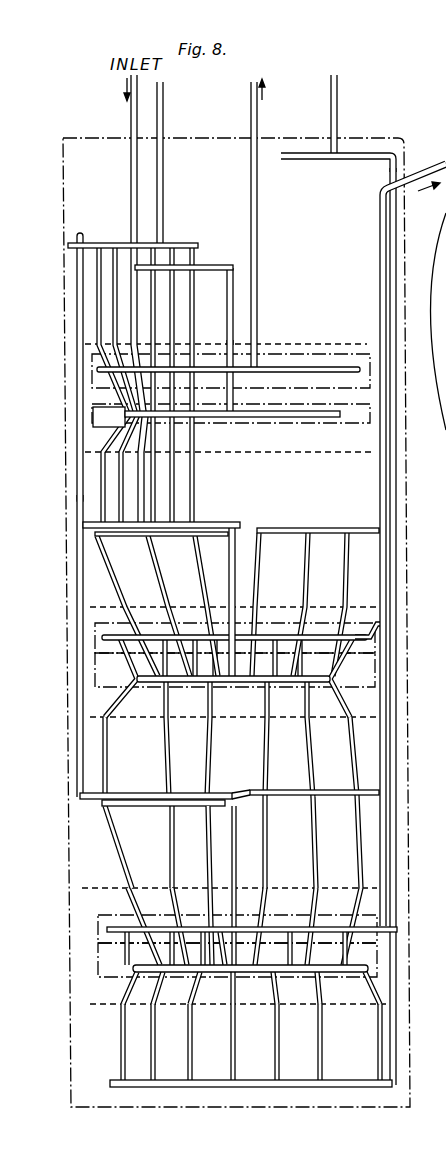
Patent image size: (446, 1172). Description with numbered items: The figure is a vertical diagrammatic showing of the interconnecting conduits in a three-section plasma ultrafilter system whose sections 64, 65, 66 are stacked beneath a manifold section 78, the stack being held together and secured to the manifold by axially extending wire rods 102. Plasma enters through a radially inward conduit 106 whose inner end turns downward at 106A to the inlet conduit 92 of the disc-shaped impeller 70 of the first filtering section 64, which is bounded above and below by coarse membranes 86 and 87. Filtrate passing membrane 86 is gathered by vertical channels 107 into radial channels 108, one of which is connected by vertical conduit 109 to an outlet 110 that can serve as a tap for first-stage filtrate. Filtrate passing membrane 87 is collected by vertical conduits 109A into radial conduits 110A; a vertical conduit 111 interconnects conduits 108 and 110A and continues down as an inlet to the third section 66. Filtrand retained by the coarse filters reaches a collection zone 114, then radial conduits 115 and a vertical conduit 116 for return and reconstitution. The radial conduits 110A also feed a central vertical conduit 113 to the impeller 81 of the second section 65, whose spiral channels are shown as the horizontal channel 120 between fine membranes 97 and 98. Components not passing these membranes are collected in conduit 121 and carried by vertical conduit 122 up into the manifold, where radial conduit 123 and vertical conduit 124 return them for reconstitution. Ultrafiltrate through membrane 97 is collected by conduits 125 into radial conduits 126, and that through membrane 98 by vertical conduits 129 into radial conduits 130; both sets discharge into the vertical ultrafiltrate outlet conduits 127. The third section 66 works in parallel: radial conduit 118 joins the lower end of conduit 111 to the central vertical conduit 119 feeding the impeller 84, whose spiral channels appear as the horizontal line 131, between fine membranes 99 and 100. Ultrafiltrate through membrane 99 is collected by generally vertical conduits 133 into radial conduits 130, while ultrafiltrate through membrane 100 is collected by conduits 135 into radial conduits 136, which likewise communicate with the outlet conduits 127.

The first filtering section 64 is at (40, 387).
The second section 65 is at (40, 627).
The third section 66 is at (40, 942).
The impeller 70 is at (93, 416).
The manifold section 78 is at (40, 226).
The rotor 81 is at (97, 683).
The rotor 84 is at (97, 985).
The first membrane 86 is at (312, 340).
The second membrane 87 is at (298, 448).
The inlet conduit 92 is at (226, 360).
The membrane 97 is at (280, 606).
The membrane 98 is at (288, 718).
The membrane 99 is at (278, 887).
The membrane 100 is at (297, 1005).
The wire rods 102 is at (435, 332).
The radially-inwardly extending conduit 106 is at (212, 256).
The downward extension of conduit 106 106A is at (233, 284).
The vertical channels 107 is at (127, 265).
The radially extending channels 108 is at (76, 233).
The vertical conduit 109 is at (163, 173).
The vertically extending conduits 109A is at (197, 472).
The outlet 110 is at (163, 101).
The radially extending conduits 110A is at (217, 522).
The vertical conduit 111 is at (76, 501).
The central vertical conduit 113 is at (236, 548).
The collection zone 114 is at (275, 353).
The radial conduits 115 is at (340, 365).
The vertical axis conduit 116 is at (257, 196).
The radial conduit 118 is at (117, 794).
The central vertical conduit 119 is at (236, 835).
The horizontal channel 120 is at (258, 683).
The conduit 121 is at (386, 627).
The vertical conduit 122 is at (398, 570).
The radial conduit 123 is at (368, 153).
The vertical conduit 124 is at (337, 95).
The conduits 125 is at (198, 577).
The radial conduits 126 is at (338, 527).
The vertical conduits 127 is at (383, 484).
The vertically oriented conduits 129 is at (263, 756).
The radial conduits 130 is at (268, 802).
The horizontal line 131 is at (251, 988).
The generally vertical conduits 133 is at (168, 845).
The generally vertical conduits 135 is at (268, 925).
The radial conduits 136 is at (218, 1087).